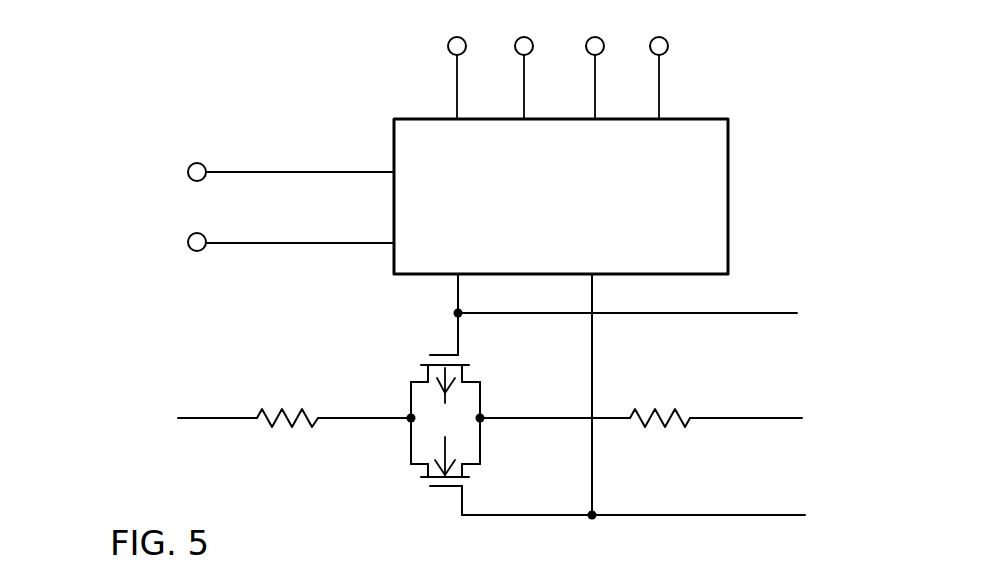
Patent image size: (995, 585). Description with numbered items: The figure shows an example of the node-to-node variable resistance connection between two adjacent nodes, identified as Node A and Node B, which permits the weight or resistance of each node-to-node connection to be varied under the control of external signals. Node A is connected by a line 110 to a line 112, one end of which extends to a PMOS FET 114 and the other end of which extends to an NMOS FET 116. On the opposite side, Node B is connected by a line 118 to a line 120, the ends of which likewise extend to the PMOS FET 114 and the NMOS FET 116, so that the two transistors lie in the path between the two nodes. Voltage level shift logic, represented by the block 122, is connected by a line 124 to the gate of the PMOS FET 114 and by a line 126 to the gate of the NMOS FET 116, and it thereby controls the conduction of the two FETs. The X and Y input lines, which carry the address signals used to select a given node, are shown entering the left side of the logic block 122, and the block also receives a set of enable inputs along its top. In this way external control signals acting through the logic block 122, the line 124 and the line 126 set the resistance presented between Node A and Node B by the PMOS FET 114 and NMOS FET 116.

The line 110 is at (350, 422).
The line 112 is at (410, 436).
The PMOS FET 114 is at (408, 357).
The NMOS FET 116 is at (442, 498).
The line 118 is at (612, 418).
The line 120 is at (480, 402).
The voltage level shift logic block 122 is at (728, 172).
The line 124 is at (458, 334).
The line 126 is at (592, 462).